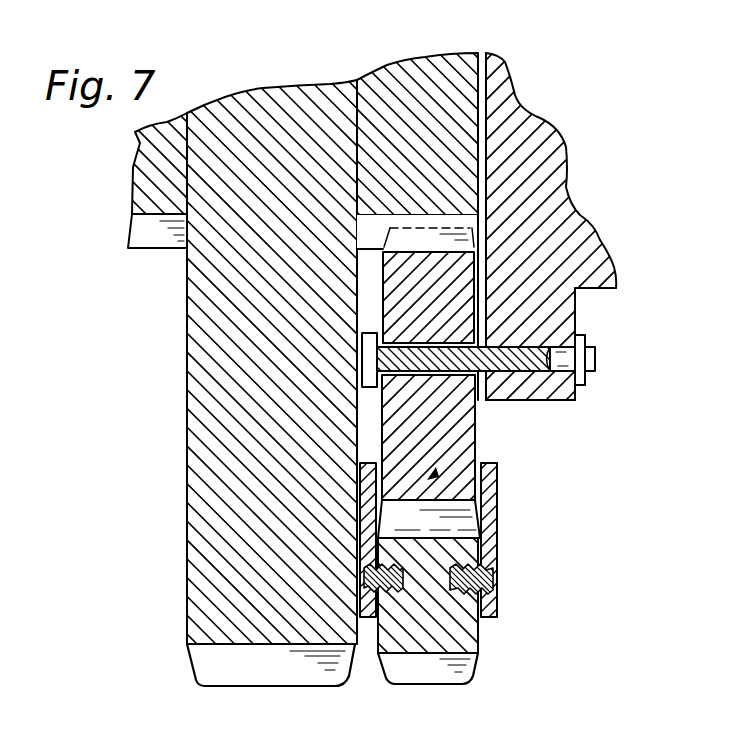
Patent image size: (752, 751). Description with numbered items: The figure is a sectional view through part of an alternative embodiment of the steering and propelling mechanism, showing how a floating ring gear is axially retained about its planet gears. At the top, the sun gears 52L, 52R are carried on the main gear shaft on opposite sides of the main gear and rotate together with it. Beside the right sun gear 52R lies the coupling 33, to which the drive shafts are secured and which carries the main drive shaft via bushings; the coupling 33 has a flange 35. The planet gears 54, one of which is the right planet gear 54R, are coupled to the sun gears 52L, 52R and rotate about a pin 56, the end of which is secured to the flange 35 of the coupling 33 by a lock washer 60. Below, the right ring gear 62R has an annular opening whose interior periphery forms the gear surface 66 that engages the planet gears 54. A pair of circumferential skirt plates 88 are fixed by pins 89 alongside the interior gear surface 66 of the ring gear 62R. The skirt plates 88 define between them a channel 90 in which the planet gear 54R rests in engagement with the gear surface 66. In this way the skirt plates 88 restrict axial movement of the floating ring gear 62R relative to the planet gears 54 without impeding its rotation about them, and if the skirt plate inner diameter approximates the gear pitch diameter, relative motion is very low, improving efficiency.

The sun gear 52L is at (153, 162).
The sun gear 52R is at (433, 73).
The coupling 33 is at (539, 143).
The flange 35 is at (542, 308).
The planet gears 54 is at (210, 502).
The planet gear 54R is at (382, 279).
The pin 56 is at (405, 360).
The lock washer 60 is at (582, 337).
The channel 90 is at (478, 440).
The gear surface 66 is at (460, 517).
The skirt plates 88 is at (370, 520).
The pins 89 is at (370, 588).
The ring gear 62R is at (457, 635).